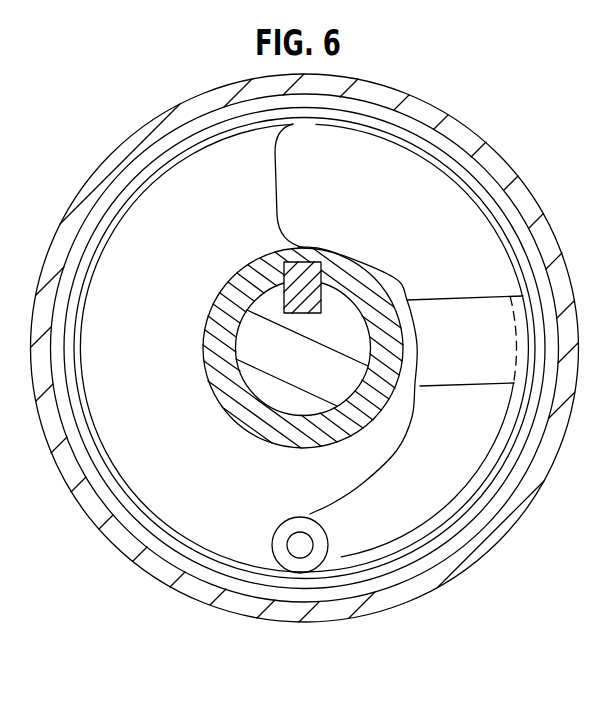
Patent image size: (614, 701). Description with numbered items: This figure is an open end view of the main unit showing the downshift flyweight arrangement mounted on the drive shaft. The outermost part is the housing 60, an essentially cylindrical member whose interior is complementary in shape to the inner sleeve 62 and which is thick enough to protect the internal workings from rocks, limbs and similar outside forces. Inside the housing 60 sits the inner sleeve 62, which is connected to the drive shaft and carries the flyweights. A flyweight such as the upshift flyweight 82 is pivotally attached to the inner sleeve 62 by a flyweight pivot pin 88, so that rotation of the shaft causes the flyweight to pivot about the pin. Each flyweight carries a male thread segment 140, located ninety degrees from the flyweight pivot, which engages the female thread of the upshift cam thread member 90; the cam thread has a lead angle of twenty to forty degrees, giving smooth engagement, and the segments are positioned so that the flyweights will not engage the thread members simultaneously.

The housing 60 is at (505, 161).
The inner sleeve 62 is at (205, 518).
The upshift flyweight 82 is at (410, 157).
The flyweight pivot pin 88 is at (322, 557).
The upshift cam thread member 90 is at (537, 300).
The male thread segment 140 is at (513, 372).